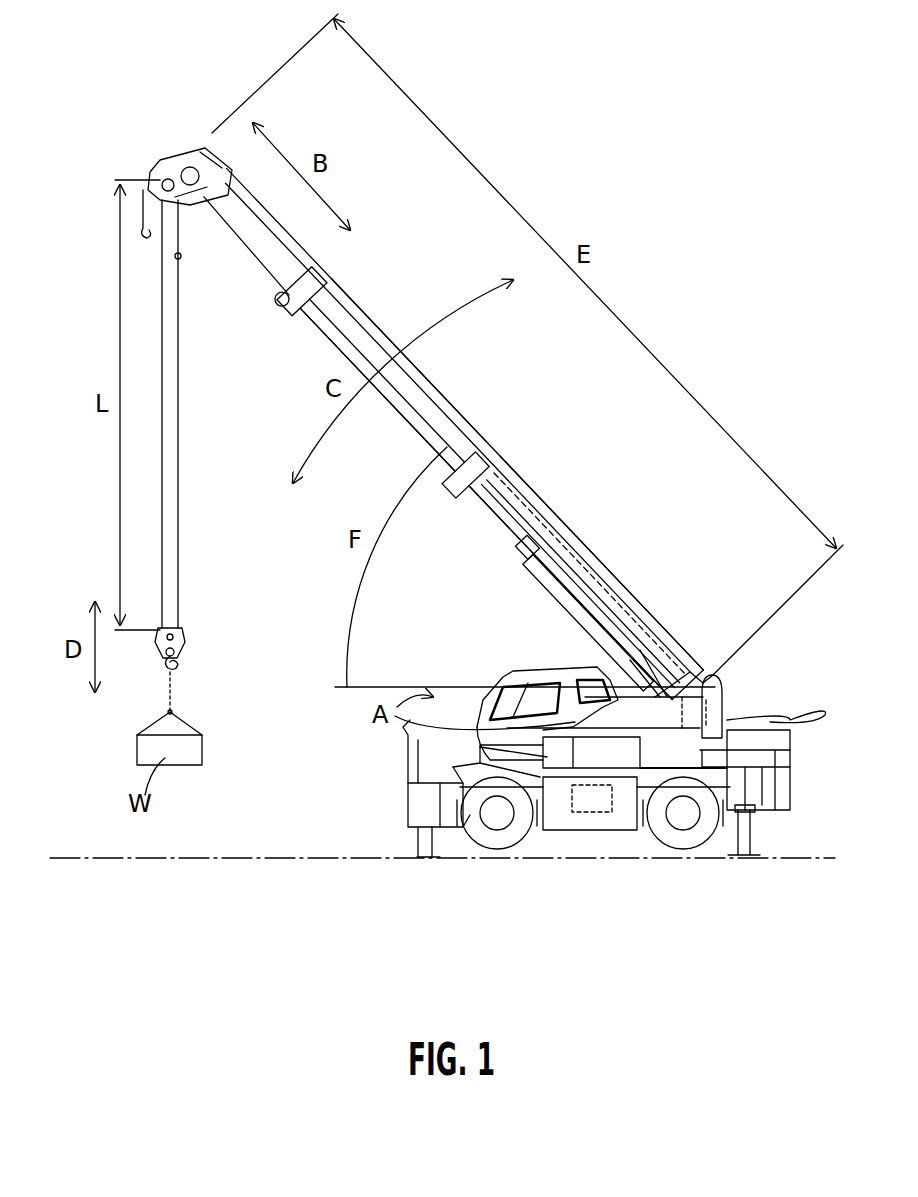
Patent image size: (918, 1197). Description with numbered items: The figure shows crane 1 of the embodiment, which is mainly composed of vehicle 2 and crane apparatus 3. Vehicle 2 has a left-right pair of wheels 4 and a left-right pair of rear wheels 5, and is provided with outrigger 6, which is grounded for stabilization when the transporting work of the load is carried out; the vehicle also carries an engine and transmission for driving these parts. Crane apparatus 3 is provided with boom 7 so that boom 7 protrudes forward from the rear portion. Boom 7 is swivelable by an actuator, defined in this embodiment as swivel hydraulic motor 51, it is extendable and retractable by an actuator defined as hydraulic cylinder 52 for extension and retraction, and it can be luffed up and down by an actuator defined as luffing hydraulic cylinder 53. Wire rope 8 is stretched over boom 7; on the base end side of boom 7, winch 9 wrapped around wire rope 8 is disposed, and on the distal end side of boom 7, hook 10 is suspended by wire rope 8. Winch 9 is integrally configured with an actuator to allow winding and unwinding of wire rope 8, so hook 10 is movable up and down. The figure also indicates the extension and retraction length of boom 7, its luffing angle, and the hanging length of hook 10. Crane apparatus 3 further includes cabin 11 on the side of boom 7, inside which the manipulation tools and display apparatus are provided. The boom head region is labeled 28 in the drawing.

The crane 1 is at (615, 701).
The vehicle 2 is at (831, 752).
The crane apparatus 3 is at (758, 652).
The wheels 4 is at (496, 847).
The rear wheels 5 is at (680, 847).
The outrigger 6 is at (425, 838).
The boom 7 is at (436, 410).
The wire rope 8 is at (614, 566).
The winch 9 is at (727, 700).
The hook 10 is at (186, 655).
The cabin 11 is at (482, 678).
The boom head 28 is at (182, 162).
The swivel hydraulic motor 51 is at (583, 815).
The hydraulic cylinder for extension and retraction 52 is at (558, 514).
The luffing hydraulic cylinder 53 is at (546, 603).